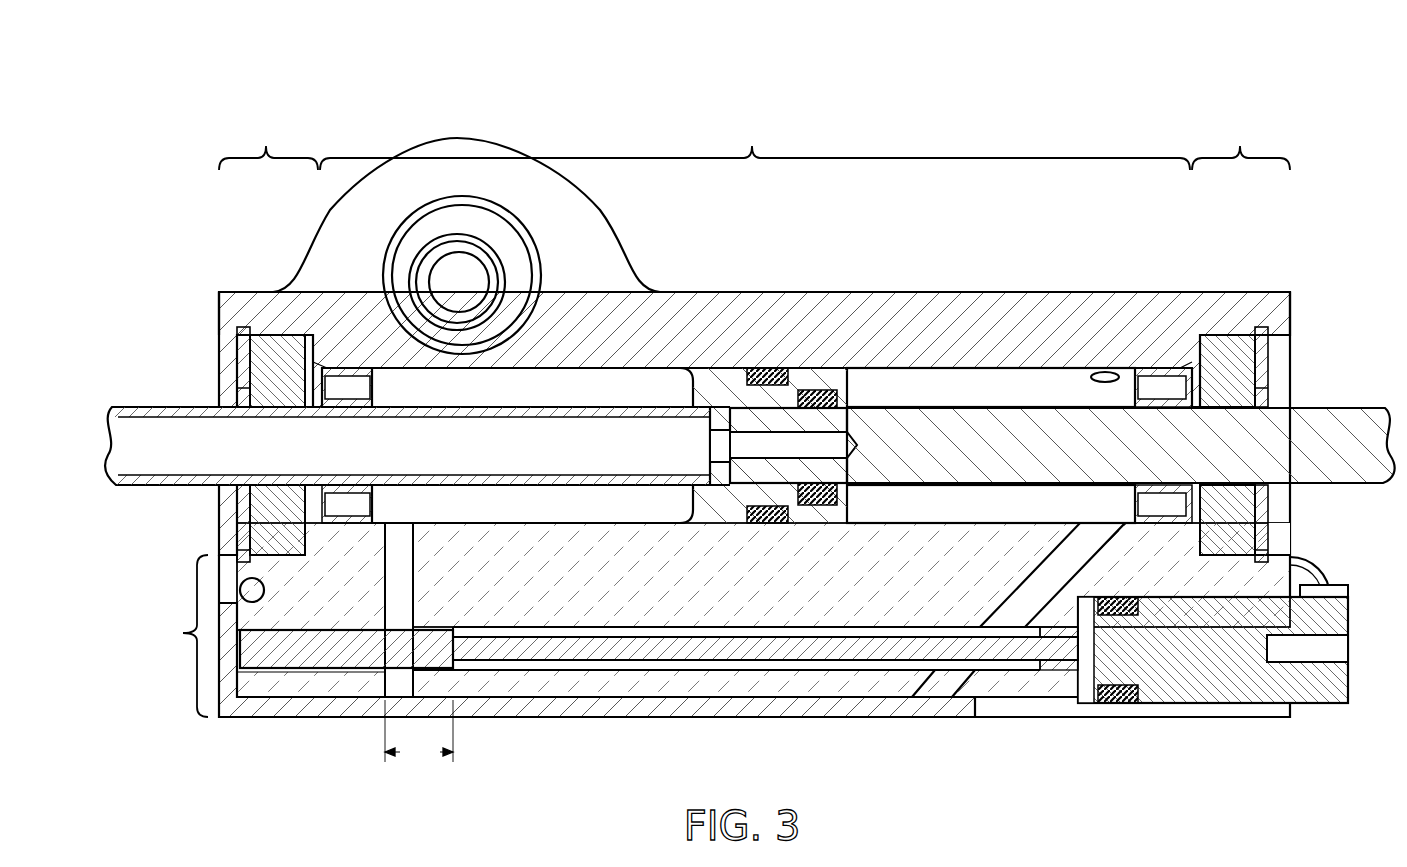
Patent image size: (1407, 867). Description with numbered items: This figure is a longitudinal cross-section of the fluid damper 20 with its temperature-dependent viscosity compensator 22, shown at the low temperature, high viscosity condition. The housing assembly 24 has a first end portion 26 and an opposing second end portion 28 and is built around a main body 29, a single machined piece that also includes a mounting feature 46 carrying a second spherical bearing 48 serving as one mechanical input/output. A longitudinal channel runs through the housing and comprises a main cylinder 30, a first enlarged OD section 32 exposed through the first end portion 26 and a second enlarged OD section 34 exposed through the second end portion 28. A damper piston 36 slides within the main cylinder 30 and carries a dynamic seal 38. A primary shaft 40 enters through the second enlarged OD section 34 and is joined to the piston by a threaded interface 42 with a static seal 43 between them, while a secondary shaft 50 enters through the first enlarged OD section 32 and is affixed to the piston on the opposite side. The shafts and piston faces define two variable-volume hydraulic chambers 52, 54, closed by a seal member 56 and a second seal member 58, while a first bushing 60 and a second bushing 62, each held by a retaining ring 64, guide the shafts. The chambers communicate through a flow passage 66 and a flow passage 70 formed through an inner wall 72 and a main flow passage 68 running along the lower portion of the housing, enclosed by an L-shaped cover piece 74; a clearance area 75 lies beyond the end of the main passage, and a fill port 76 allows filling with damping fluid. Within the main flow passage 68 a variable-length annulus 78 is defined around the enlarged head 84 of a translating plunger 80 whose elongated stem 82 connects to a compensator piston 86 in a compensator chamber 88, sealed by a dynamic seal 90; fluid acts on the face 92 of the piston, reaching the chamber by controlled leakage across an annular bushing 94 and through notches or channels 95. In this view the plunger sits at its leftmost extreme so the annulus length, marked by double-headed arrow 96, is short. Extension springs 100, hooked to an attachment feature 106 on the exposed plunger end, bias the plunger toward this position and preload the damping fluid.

The fluid damper 20 is at (192, 210).
The temperature-dependent viscosity compensator 22 is at (175, 636).
The housing assembly 24 is at (797, 276).
The first end portion 26 is at (230, 291).
The second end portion 28 is at (1268, 291).
The main body 29 is at (912, 291).
The main cylinder 30 is at (755, 141).
The first enlarged outer diameter section 32 is at (268, 141).
The second enlarged outer diameter section 34 is at (1241, 141).
The damper piston 36 is at (722, 517).
The dynamic seal 38 is at (768, 525).
The primary shaft 40 is at (1338, 408).
The threaded interface 42 is at (828, 476).
The static seal 43 is at (815, 390).
The mounting feature 46 is at (337, 213).
The second spherical bearing 48 is at (500, 226).
The secondary shaft 50 is at (165, 406).
The hydraulic chamber 52 is at (517, 510).
The hydraulic chamber 54 is at (926, 510).
The seal member 56 is at (347, 519).
The second seal member 58 is at (1165, 522).
The first bushing 60 is at (283, 550).
The second bushing 62 is at (1232, 550).
The retaining ring 64 is at (243, 533).
The flow passage 66 is at (418, 560).
The main flow passage 68 is at (640, 670).
The flow passage 70 is at (1058, 553).
The inner wall 72 is at (864, 607).
The cover piece 74 is at (780, 717).
The clearance area 75 is at (312, 672).
The fill port 76 is at (1105, 372).
The variable-length annulus 78 is at (440, 627).
The translating plunger 80 is at (636, 632).
The elongated stem 82 is at (548, 650).
The enlarged head 84 is at (370, 643).
The compensator piston 86 is at (1200, 680).
The compensator chamber 88 is at (1086, 702).
The dynamic seal 90 is at (1118, 703).
The face 92 is at (1082, 620).
The annular bushing 94 is at (1055, 670).
The notches or channels 95 is at (1042, 637).
The double-headed arrow 96 is at (405, 758).
The extension springs 100 is at (1325, 580).
The attachment feature 106 is at (1320, 704).